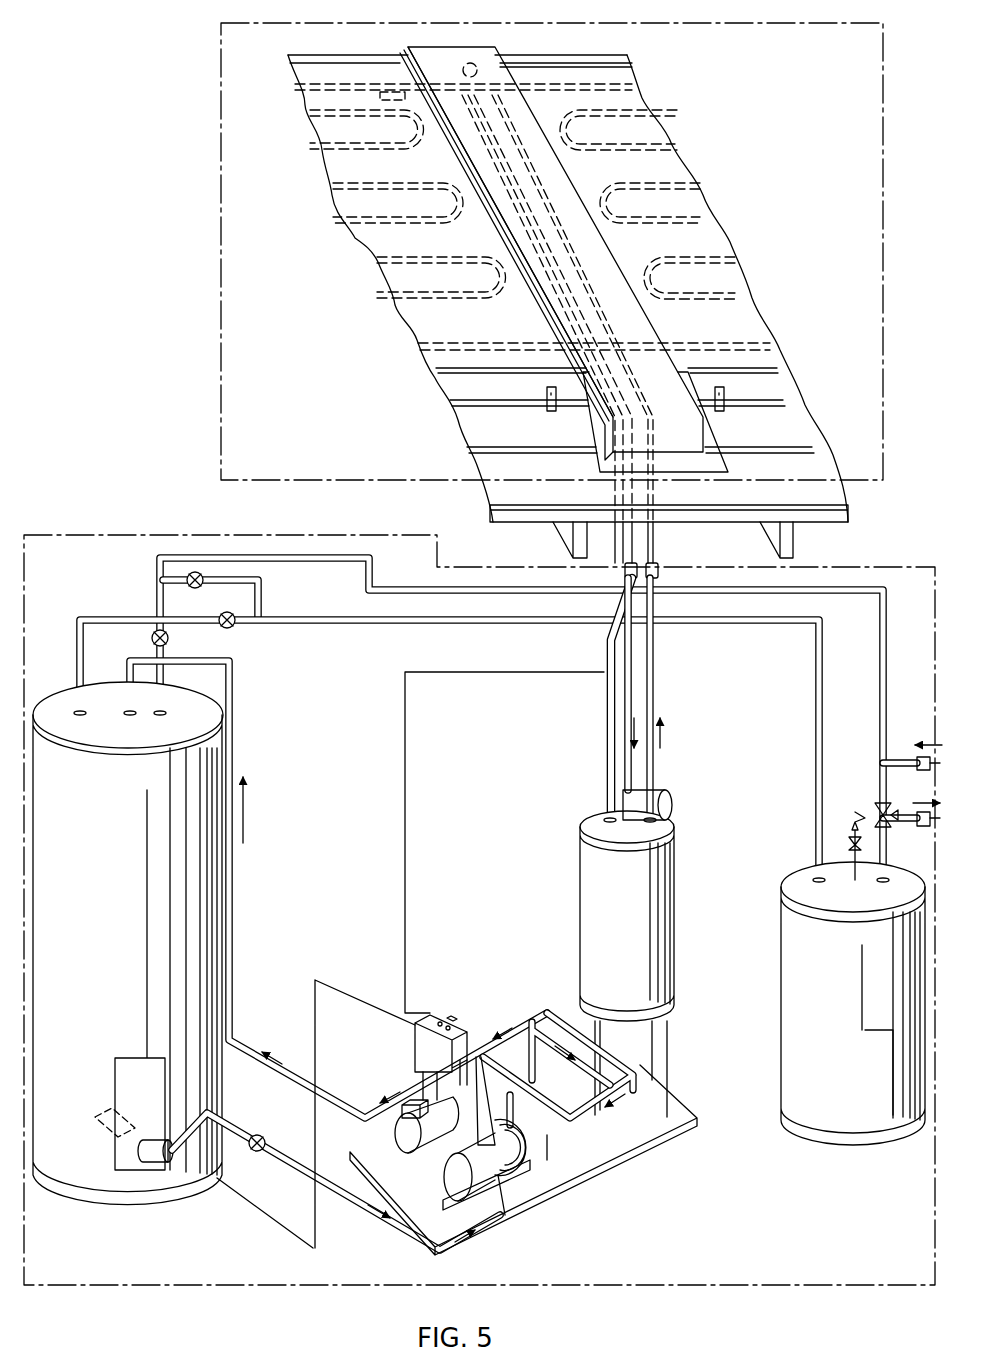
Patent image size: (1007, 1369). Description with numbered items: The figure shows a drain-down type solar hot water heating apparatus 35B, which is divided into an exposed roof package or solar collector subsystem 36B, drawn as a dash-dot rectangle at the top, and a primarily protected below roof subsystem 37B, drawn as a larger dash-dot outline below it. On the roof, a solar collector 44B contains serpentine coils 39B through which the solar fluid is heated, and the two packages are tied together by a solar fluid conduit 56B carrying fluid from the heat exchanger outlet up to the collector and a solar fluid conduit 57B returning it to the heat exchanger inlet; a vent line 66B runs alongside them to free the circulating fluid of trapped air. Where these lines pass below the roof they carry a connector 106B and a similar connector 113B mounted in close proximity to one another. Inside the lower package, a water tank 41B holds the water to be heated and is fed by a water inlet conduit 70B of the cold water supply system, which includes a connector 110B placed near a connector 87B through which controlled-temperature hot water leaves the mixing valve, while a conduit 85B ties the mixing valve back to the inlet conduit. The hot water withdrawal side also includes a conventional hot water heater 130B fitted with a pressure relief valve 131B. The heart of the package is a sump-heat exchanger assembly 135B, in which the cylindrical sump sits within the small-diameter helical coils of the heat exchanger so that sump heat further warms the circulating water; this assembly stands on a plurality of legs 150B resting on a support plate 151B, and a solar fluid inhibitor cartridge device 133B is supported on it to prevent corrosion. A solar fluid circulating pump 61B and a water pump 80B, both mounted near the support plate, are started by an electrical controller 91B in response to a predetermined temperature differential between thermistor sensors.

The solar hot water heating apparatus 35B is at (168, 85).
The solar collector subsystem 36B is at (221, 378).
The below roof subsystem 37B is at (122, 530).
The coils 39B is at (706, 258).
The water tank 41B is at (205, 912).
The solar collector 44B is at (370, 237).
The solar fluid conduit 56B is at (655, 765).
The solar fluid conduit 57B is at (624, 752).
The solar fluid circulating pump 61B is at (405, 1135).
The vent line 66B is at (608, 707).
The water inlet conduit 70B is at (481, 719).
The pump 80B is at (543, 1160).
The conduit 85B is at (879, 773).
The connector 87B is at (920, 815).
The electrical controller 91B is at (427, 1040).
The connector 106B is at (658, 567).
The connector 110B is at (917, 755).
The connector 113B is at (620, 575).
The conventional hot water heater 130B is at (782, 949).
The pressure relief valve 131B is at (850, 836).
The solar fluid inhibitor cartridge device 133B is at (673, 802).
The sump-heat exchanger assembly 135B is at (578, 877).
The legs 150B is at (587, 1027).
The support plate 151B is at (632, 1163).